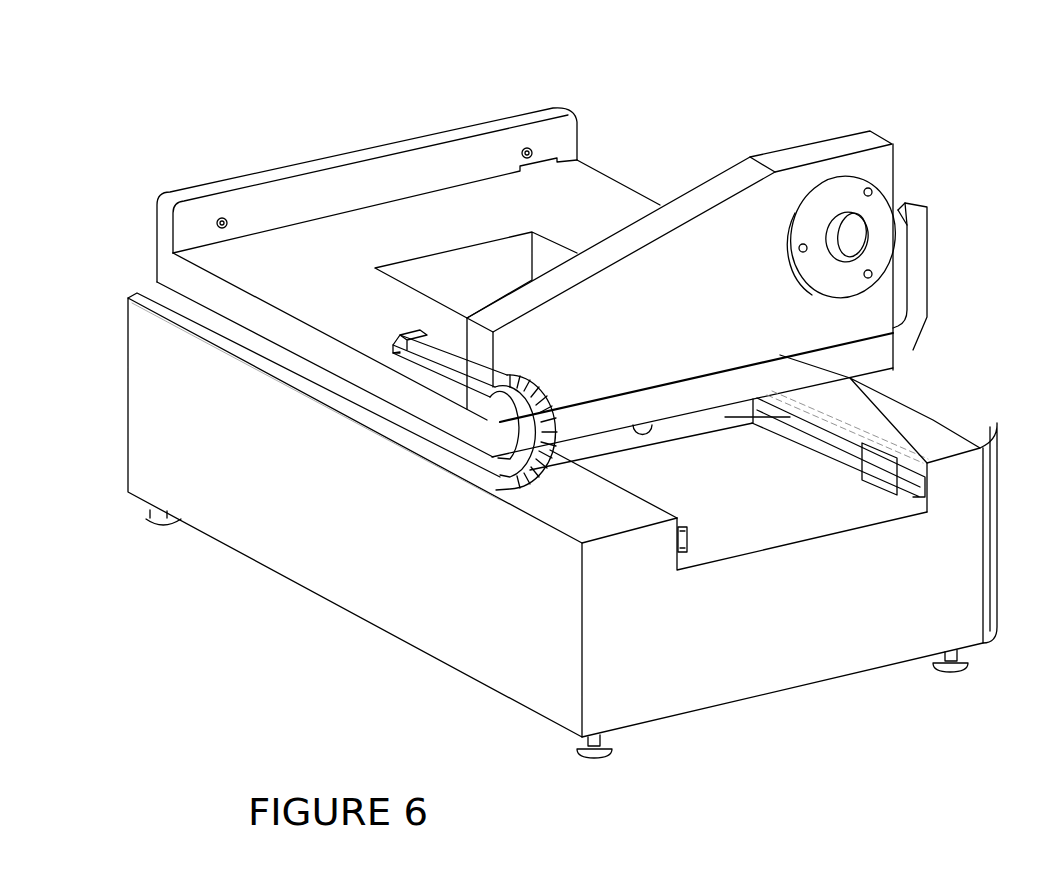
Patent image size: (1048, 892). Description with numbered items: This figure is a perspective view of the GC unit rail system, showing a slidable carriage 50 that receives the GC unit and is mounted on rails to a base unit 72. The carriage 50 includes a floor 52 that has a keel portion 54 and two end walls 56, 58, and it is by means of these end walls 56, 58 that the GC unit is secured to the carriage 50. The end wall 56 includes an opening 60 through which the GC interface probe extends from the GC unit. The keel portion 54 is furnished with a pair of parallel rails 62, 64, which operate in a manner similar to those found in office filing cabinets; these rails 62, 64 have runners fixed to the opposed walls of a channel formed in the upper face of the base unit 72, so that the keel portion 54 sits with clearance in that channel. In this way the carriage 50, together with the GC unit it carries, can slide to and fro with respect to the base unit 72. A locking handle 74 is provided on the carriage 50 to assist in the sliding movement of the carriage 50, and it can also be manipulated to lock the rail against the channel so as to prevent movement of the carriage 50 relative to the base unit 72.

The carriage 50 is at (585, 419).
The floor 52 is at (585, 192).
The keel portion 54 is at (768, 398).
The end wall 56 is at (882, 171).
The end wall 58 is at (565, 135).
The opening 60 is at (879, 199).
The rail 62 is at (688, 540).
The rail 64 is at (852, 447).
The base unit 72 is at (957, 553).
The locking handle 74 is at (923, 242).